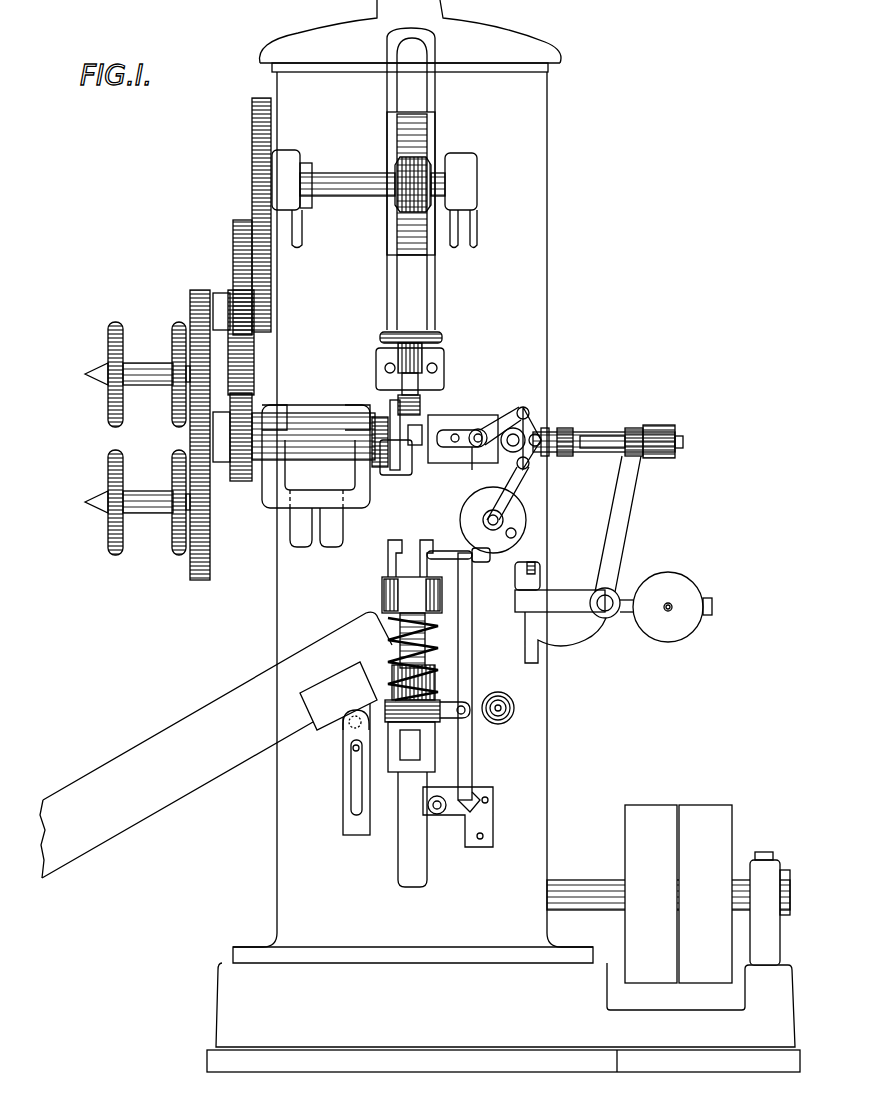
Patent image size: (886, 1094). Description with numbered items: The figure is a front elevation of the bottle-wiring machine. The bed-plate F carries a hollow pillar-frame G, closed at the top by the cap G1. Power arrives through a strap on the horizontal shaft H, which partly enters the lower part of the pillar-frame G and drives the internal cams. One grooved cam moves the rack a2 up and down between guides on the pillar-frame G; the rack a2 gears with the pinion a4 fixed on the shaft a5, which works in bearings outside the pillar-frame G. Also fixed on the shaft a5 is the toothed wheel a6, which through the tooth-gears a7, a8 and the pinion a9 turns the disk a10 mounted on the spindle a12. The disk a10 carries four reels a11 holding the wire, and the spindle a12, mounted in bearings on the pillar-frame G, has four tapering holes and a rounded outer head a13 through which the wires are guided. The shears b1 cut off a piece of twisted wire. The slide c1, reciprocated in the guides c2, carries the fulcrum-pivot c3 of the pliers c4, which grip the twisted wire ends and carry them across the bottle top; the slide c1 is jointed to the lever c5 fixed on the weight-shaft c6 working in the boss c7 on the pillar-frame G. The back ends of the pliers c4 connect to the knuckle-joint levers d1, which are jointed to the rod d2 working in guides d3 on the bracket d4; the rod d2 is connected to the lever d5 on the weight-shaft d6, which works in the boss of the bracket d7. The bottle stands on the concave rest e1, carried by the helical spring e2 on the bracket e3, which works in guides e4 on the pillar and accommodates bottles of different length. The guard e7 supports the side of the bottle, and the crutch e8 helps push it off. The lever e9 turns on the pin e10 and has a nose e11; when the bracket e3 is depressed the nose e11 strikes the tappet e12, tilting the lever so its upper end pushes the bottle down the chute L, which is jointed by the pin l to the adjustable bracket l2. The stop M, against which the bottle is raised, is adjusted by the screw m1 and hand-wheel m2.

The hollow pillar-frame G is at (413, 517).
The cap G1 is at (410, 36).
The rack a2 is at (425, 133).
The pinion a4 is at (413, 184).
The shaft a5 is at (374, 198).
The toothed wheel a6 is at (251, 215).
The tooth-gear a7 is at (255, 295).
The tooth-gear a8 is at (233, 342).
The pinion a9 is at (233, 447).
The disk a10 is at (207, 435).
The reels a11 is at (137, 438).
The spindle a12 is at (313, 476).
The rounded outer head a13 is at (387, 452).
The hand-wheel m2 is at (442, 337).
The screw m1 is at (422, 355).
The block b is at (401, 420).
The shears b1 is at (396, 437).
The stop M is at (440, 413).
The slide c1 is at (475, 468).
The guides c2 is at (459, 427).
The fulcrum-pivot c3 is at (483, 437).
The pliers c4 is at (451, 439).
The lever c5 is at (510, 463).
The weight-shaft c6 is at (493, 520).
The boss c7 is at (513, 522).
The knuckle-joint levers d1 is at (541, 426).
The rod d2 is at (617, 440).
The guides d3 is at (620, 427).
The bracket d4 is at (602, 422).
The lever d5 is at (619, 510).
The weight-shaft d6 is at (613, 602).
The bracket d7 is at (565, 637).
The concave block e1 is at (412, 595).
The helical spring e2 is at (432, 648).
The bracket e3 is at (412, 693).
The guides e4 is at (410, 760).
The guard e7 is at (408, 558).
The crutch e8 is at (440, 551).
The lever e9 is at (463, 676).
The pin e10 is at (477, 701).
The nose e11 is at (460, 791).
The tappet e12 is at (458, 817).
The chute L is at (216, 745).
The pin l is at (338, 696).
The bracket l2 is at (363, 762).
The bed-plate F is at (503, 1017).
The horizontal shaft H is at (668, 894).